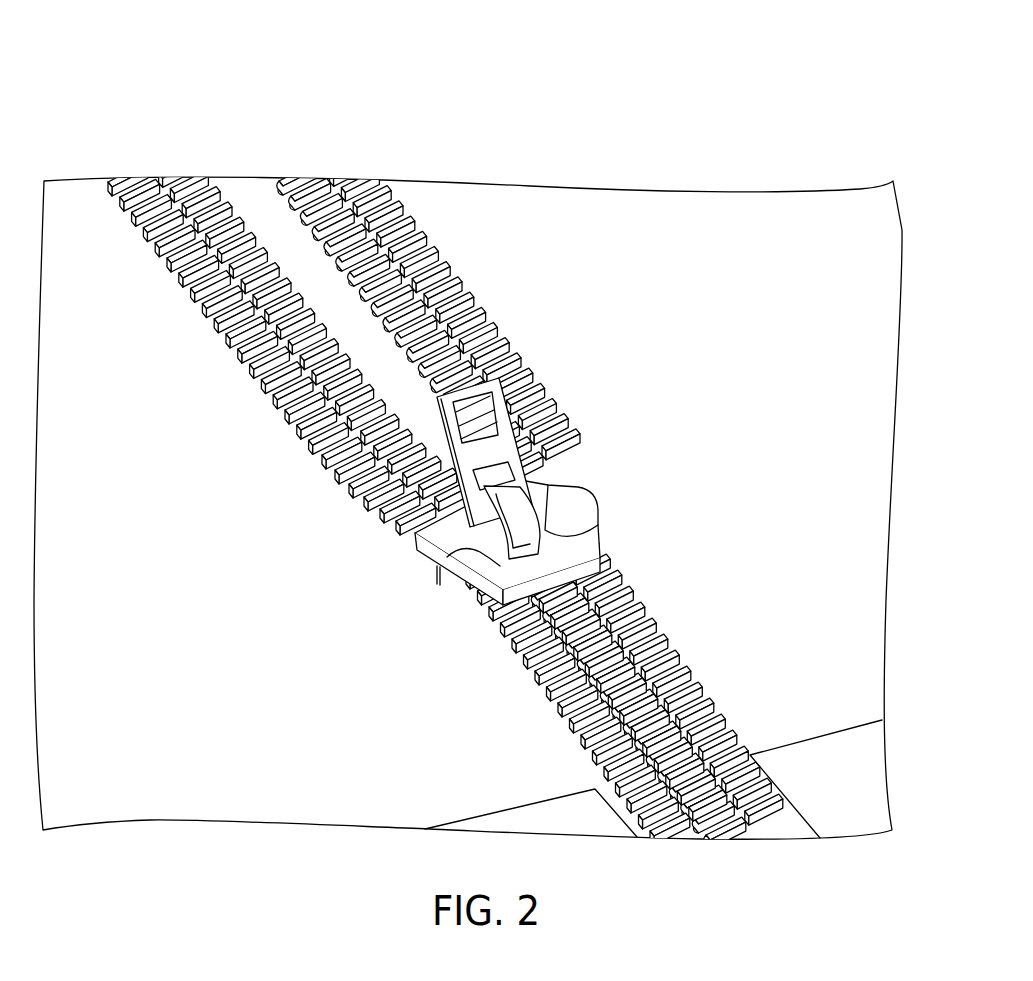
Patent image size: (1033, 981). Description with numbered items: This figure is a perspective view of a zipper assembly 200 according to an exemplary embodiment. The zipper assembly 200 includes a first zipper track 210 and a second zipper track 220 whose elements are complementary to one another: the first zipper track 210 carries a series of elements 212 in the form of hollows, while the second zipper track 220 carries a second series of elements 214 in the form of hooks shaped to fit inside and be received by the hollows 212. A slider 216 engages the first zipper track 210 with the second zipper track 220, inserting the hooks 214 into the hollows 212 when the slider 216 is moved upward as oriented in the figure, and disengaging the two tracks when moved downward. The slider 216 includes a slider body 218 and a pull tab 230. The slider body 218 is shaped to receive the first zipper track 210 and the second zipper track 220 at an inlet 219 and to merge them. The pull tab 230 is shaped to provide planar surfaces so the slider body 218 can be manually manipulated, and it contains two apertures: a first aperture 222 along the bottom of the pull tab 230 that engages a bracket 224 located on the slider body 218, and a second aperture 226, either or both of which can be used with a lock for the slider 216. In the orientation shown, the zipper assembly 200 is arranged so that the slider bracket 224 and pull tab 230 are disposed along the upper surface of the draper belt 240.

The zipper assembly 200 is at (424, 430).
The first zipper track 210 is at (428, 306).
The elements (hollows) 212 is at (390, 268).
The elements (hooks) 214 is at (233, 243).
The slider 216 is at (518, 457).
The slider body 218 is at (505, 570).
The inlet 219 is at (400, 528).
The second zipper track 220 is at (269, 328).
The first aperture 222 is at (522, 409).
The bracket 224 is at (540, 518).
The second aperture 226 is at (478, 420).
The pull tab 230 is at (503, 442).
The draper belt 240 is at (870, 518).